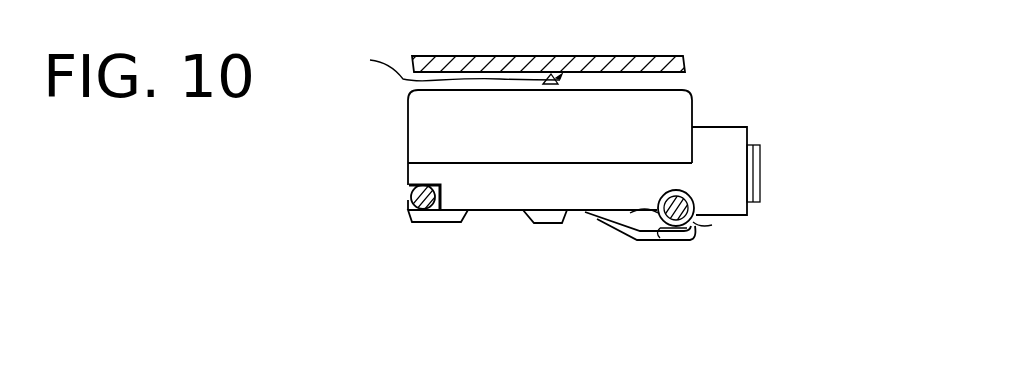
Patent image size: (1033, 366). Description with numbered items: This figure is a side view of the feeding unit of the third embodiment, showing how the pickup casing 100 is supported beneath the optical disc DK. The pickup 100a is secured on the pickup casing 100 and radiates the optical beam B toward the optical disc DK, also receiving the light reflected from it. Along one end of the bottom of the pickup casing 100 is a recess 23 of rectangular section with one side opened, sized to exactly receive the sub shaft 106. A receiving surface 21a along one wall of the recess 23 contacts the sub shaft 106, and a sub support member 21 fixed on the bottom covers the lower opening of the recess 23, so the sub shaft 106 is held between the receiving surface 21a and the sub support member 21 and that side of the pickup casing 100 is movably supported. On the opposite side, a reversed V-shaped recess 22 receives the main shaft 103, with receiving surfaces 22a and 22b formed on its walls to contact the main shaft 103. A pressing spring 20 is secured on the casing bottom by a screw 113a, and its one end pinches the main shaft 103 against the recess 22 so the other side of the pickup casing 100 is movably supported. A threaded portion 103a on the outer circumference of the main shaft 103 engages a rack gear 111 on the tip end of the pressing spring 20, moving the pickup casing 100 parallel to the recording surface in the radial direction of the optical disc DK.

The optical disc DK is at (536, 55).
The optical beam B is at (447, 59).
The pickup casing 100 is at (722, 127).
The pickup 100a is at (420, 128).
The main shaft 103 is at (694, 198).
The threaded portion 103a is at (698, 204).
The recess 22 is at (680, 191).
The receiving surface 22a is at (697, 220).
The receiving surface 22b is at (645, 214).
The rack gear 111 is at (688, 228).
The pressing spring 20 is at (637, 239).
The sub support member 21 is at (428, 222).
The receiving surface 21a is at (408, 188).
The recess 23 is at (436, 190).
The sub shaft 106 is at (409, 204).
The screw 113a is at (553, 223).